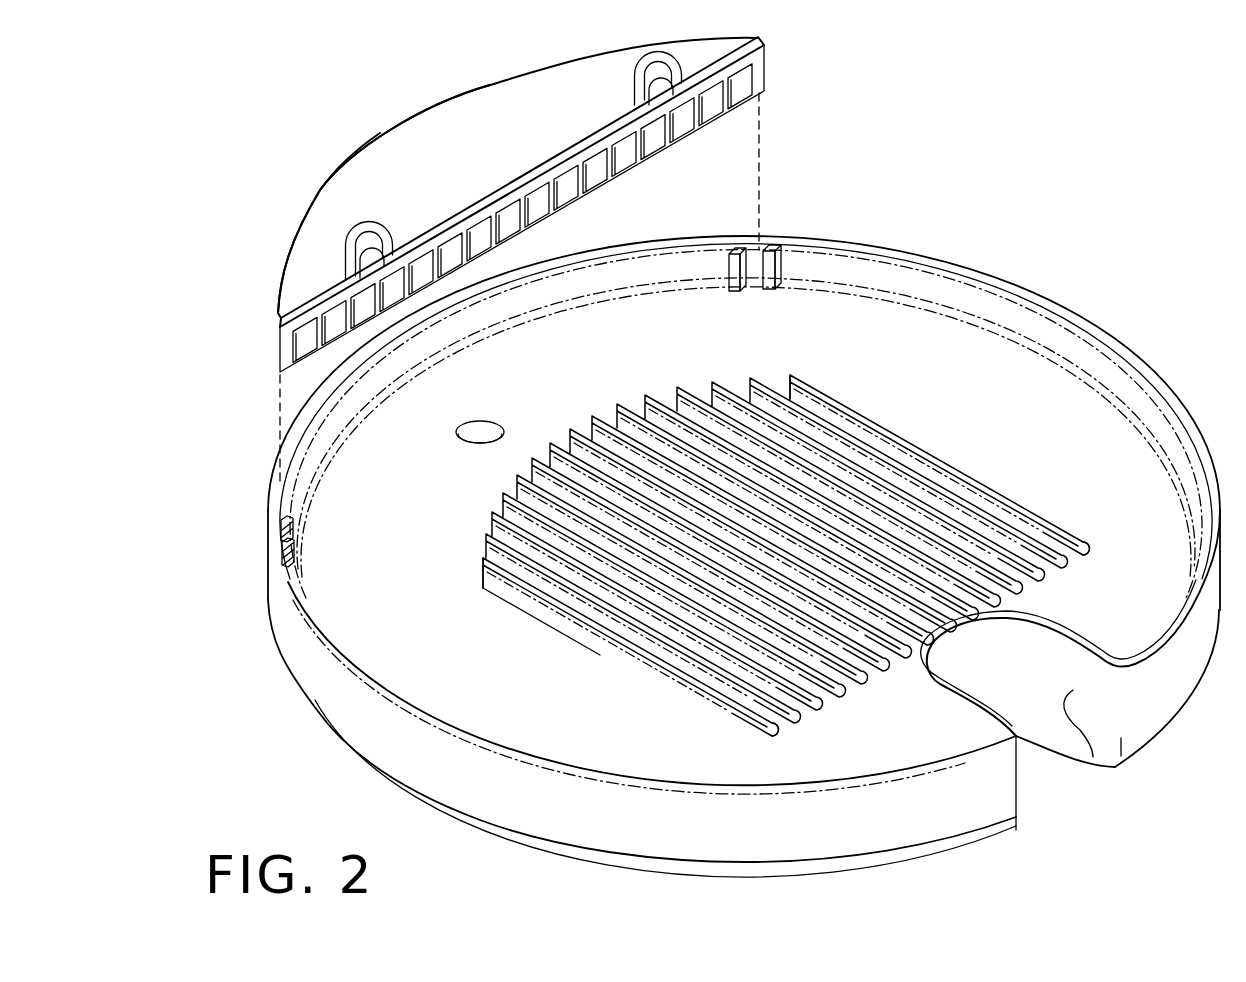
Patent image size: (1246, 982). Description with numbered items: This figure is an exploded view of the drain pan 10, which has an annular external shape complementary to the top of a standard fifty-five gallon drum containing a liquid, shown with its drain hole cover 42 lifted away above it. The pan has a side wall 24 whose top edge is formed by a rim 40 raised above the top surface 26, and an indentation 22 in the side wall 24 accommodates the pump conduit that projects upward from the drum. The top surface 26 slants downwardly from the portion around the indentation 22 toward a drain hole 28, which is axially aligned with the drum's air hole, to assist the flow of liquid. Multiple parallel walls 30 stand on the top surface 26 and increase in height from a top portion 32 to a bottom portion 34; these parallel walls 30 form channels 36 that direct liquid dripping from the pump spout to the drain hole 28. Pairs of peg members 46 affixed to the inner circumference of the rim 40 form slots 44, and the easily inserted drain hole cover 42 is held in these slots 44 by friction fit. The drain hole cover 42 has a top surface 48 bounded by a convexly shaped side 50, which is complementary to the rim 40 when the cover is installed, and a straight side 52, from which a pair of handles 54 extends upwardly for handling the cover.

The drain pan 10 is at (1036, 252).
The indentation 22 is at (1093, 757).
The side wall 24 is at (940, 808).
The top surface 26 is at (1040, 429).
The drain hole 28 is at (482, 432).
The parallel walls 30 is at (938, 442).
The top portion 32 is at (1088, 540).
The bottom portion 34 is at (803, 386).
The channels 36 is at (660, 383).
The rim 40 is at (1122, 348).
The drain hole cover 42 is at (458, 90).
The slots 44 is at (750, 293).
The peg members 46 is at (729, 268).
The top surface 48 is at (470, 165).
The convexly shaped side 50 is at (363, 157).
The straight side 52 is at (767, 73).
The handles 54 is at (647, 68).